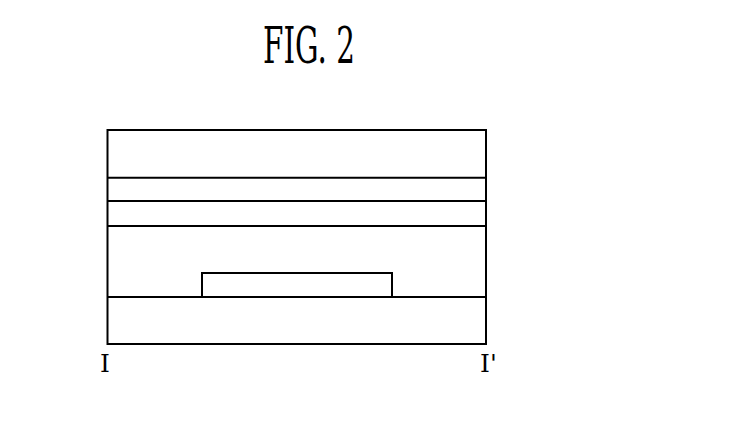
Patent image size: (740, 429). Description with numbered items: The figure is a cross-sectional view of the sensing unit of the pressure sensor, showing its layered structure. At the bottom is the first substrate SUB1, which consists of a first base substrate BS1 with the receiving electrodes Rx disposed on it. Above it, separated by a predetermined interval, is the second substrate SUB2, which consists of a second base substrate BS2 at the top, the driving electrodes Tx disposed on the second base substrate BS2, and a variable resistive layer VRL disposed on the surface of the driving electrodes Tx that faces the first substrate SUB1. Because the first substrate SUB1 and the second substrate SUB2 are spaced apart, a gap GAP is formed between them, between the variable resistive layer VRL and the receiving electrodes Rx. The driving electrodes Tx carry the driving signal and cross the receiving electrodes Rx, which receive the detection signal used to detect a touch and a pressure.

The second base substrate BS2 is at (486, 144).
The driving electrodes Tx is at (486, 189).
The variable resistive layer VRL is at (486, 217).
The second substrate SUB2 is at (559, 133).
The gap GAP is at (122, 252).
The receiving electrodes Rx is at (383, 281).
The first base substrate BS1 is at (486, 317).
The first substrate SUB1 is at (559, 265).